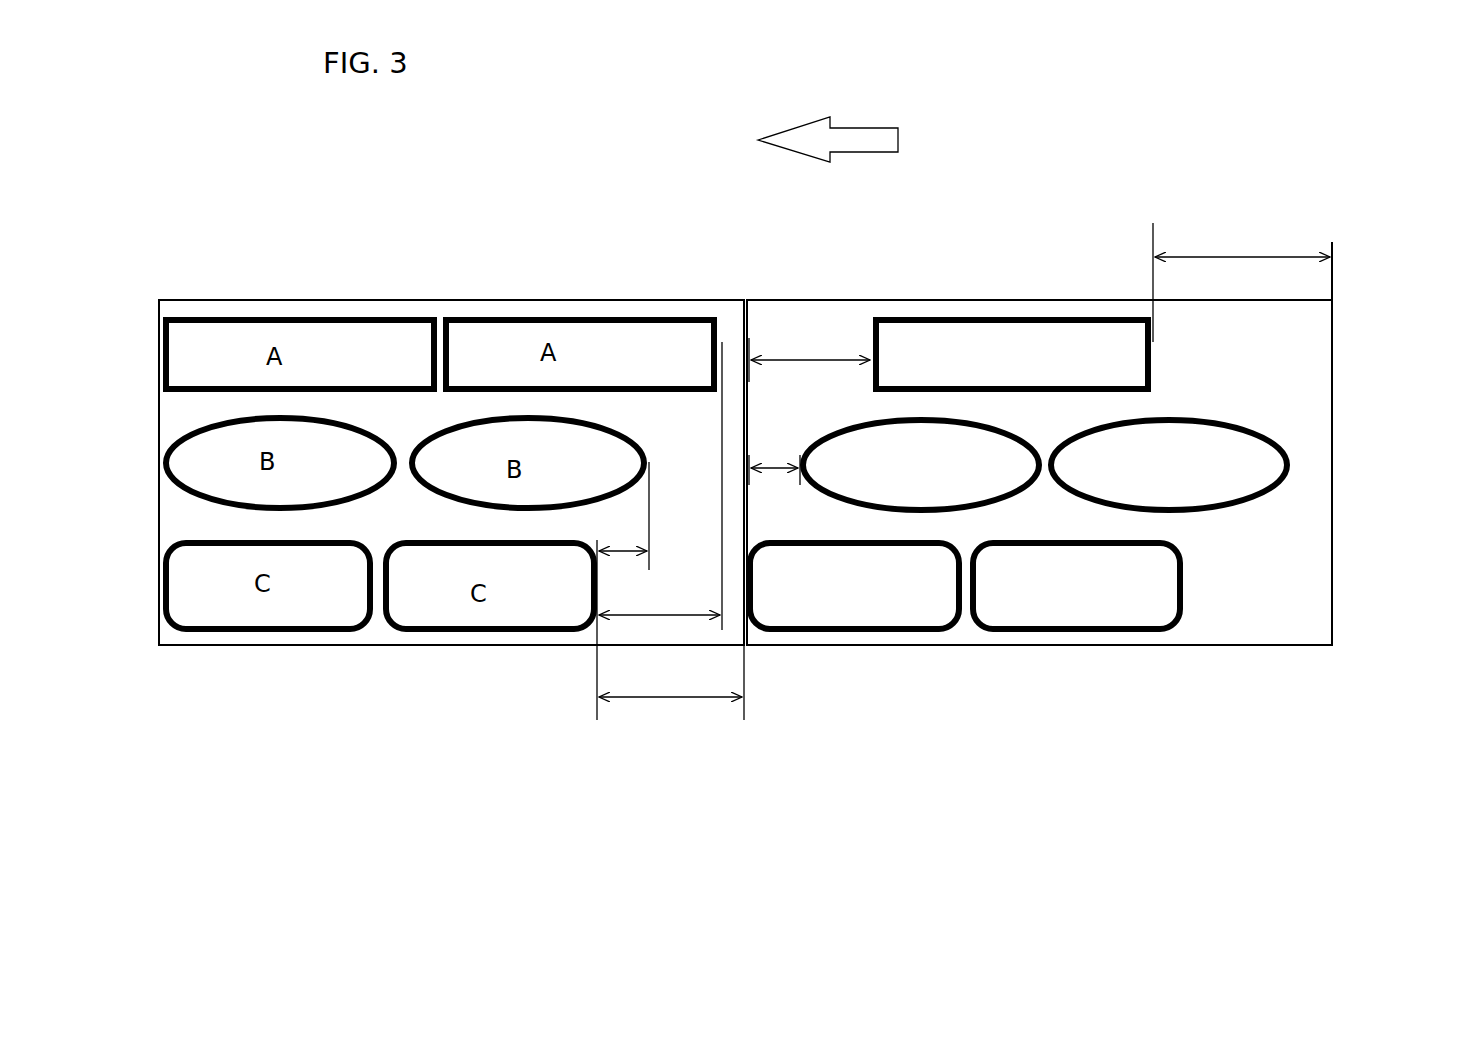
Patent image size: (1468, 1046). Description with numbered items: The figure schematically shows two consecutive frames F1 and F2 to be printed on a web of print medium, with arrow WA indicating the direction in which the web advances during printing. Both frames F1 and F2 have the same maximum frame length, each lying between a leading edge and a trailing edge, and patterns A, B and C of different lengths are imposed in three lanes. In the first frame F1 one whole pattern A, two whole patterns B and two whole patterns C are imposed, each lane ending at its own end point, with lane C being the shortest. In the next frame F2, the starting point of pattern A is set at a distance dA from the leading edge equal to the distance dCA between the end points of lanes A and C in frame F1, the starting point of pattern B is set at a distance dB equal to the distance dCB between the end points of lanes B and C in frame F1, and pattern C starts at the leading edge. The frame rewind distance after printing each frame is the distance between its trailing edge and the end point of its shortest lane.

The frame F1 is at (388, 310).
The frame F2 is at (1222, 636).
The arrow WA is at (831, 128).
The distance dA is at (809, 356).
The distance dB is at (774, 458).
The distance dCB is at (623, 533).
The distance dCA is at (659, 597).